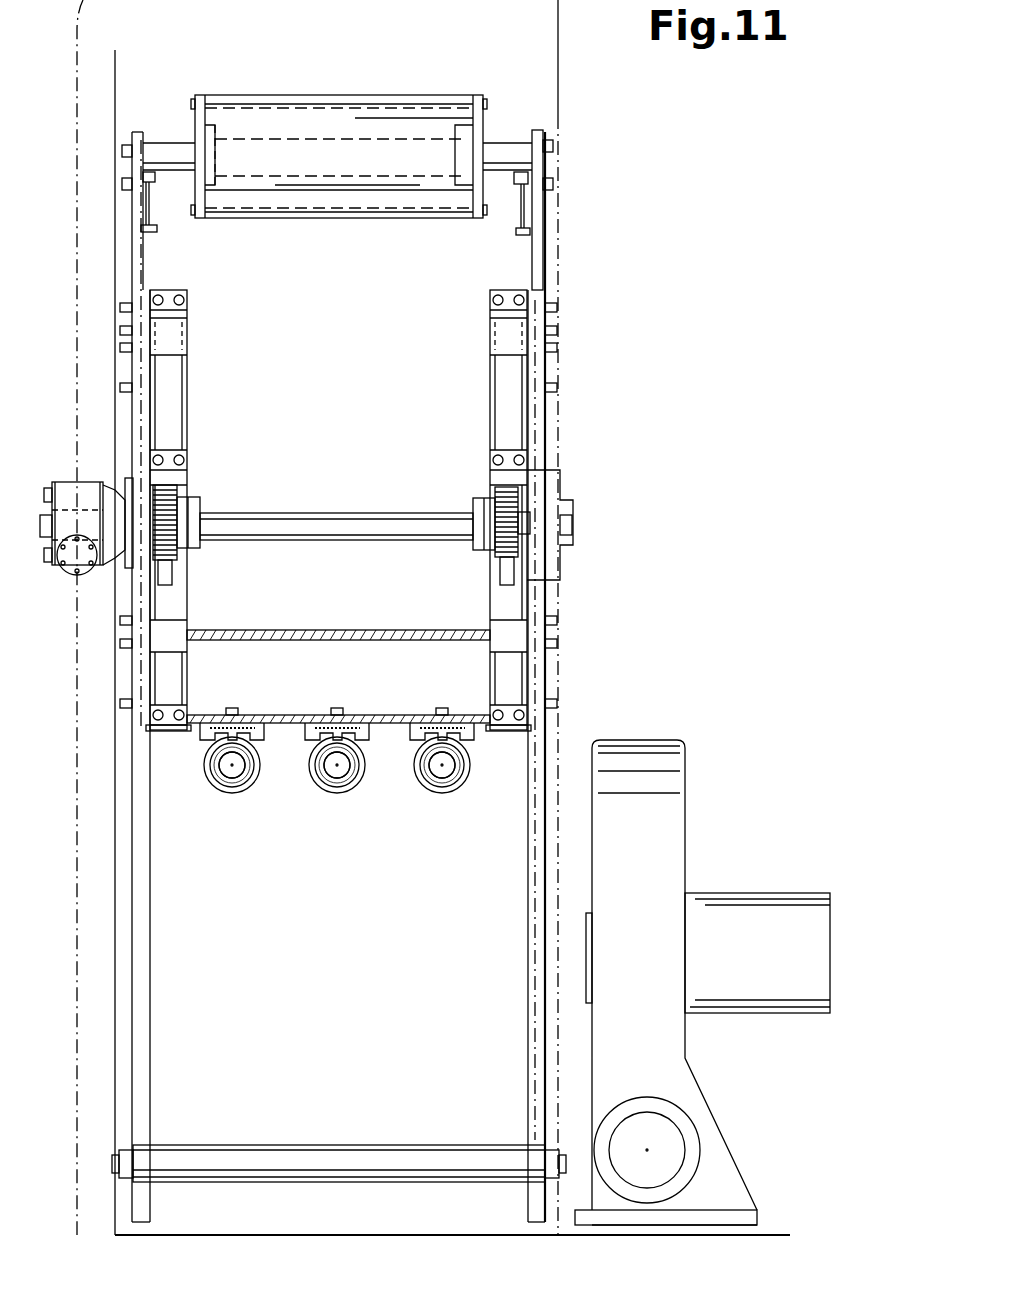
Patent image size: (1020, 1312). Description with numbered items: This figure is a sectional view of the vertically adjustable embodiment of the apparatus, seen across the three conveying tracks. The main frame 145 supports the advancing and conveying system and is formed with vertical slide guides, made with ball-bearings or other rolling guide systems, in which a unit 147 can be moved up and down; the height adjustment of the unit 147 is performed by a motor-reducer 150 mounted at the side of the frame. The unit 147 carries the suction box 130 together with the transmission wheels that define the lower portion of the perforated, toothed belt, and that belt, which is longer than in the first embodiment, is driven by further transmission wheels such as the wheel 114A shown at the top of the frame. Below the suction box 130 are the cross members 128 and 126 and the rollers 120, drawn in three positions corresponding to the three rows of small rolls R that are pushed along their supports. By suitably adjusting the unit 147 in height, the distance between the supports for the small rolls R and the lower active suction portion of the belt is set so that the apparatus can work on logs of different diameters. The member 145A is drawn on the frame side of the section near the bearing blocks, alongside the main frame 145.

The further transmission wheel 114A is at (387, 220).
The unit 147 is at (510, 278).
The bearing block / frame member 145A is at (543, 407).
The motor-reducer 150 is at (62, 476).
The suction box 130 is at (358, 650).
The lower cross bar 128 is at (285, 718).
The roller mounting bracket 126 is at (345, 718).
The guide roller 120 is at (200, 735).
The small rolls R is at (257, 788).
The main frame 145 is at (533, 895).